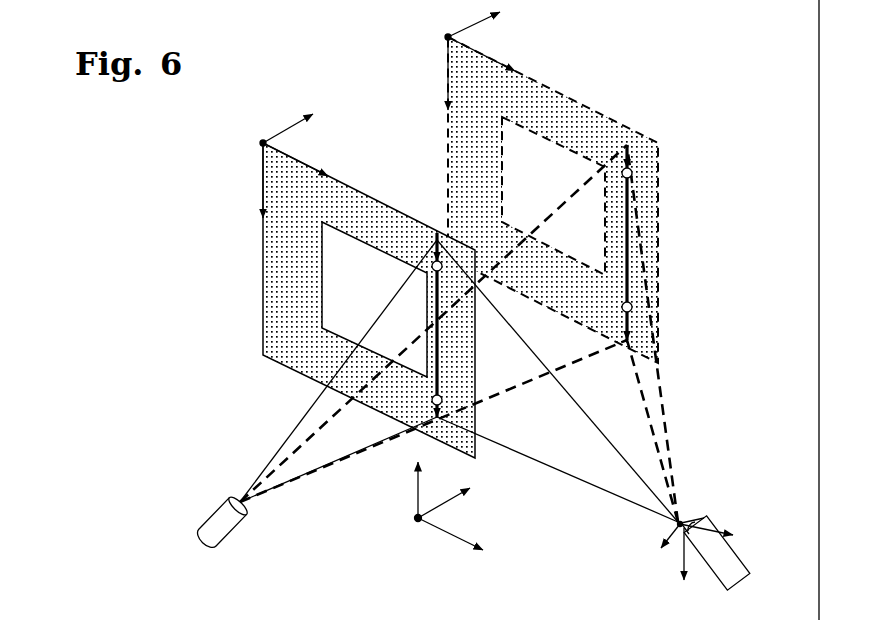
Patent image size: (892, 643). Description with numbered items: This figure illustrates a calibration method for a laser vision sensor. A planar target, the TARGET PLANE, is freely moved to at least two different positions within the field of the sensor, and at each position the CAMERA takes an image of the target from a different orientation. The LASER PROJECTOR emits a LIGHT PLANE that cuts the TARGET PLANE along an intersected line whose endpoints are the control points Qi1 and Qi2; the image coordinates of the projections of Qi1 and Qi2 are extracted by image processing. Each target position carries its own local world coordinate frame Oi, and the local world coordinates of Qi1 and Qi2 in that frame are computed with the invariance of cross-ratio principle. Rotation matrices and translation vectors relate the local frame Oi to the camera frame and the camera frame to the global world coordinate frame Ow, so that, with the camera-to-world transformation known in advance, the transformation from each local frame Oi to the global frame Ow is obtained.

The target plane TARGET PLANE is at (263, 287).
The light plane LIGHT PLANE is at (320, 396).
The control point Q_i,1 Qi1 is at (433, 258).
The control point Q_i,2 Qi2 is at (417, 400).
The local world coordinate frame O_i-x_iy_iz_i Oi is at (291, 160).
The global world coordinate frame O_w-x_wy_wz_w Ow is at (449, 507).
The laser projector LASER PROJECTOR is at (161, 510).
The camera CAMERA is at (717, 544).